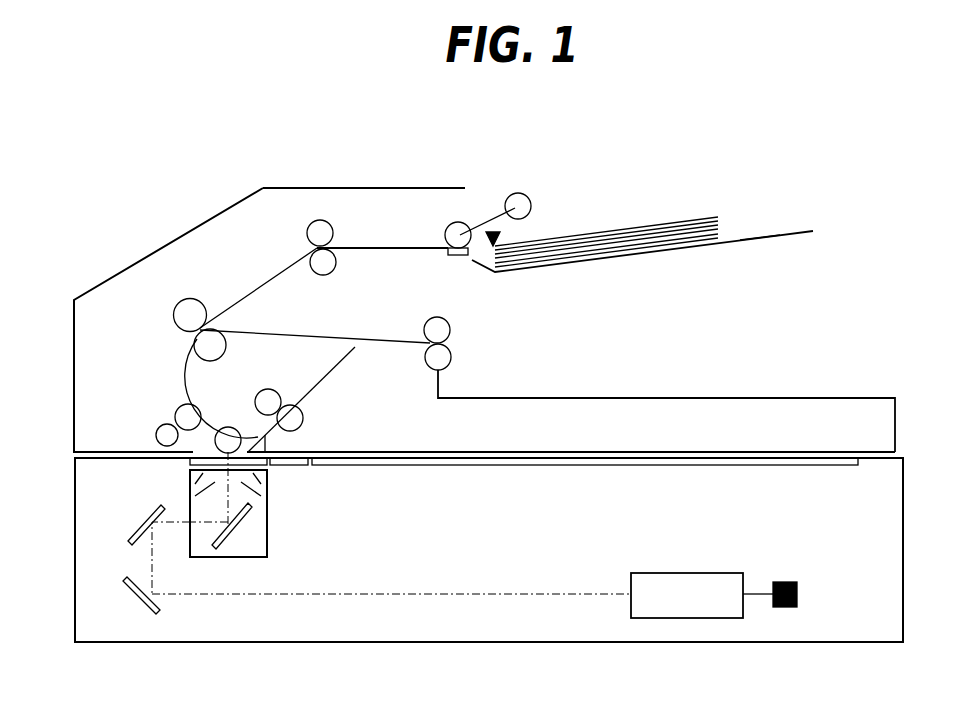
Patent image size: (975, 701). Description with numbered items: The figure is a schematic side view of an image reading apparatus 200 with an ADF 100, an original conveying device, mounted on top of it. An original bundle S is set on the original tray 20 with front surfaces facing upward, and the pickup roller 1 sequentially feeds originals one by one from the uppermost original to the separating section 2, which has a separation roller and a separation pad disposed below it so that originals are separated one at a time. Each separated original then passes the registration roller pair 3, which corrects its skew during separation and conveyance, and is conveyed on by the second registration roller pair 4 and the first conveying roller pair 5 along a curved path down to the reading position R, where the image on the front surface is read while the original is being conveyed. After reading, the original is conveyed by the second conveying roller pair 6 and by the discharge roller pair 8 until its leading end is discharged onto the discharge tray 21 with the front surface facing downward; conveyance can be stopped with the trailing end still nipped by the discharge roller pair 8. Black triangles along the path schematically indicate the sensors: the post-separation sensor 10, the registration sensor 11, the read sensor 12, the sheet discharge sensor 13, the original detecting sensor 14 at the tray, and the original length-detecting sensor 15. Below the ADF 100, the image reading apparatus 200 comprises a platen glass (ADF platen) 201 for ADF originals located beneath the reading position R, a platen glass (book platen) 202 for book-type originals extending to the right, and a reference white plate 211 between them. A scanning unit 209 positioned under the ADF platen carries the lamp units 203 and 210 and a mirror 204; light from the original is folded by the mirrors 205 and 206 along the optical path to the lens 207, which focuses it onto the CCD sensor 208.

The ADF 100 is at (317, 178).
The image reading apparatus 200 is at (17, 490).
The pickup roller 1 is at (520, 193).
The separating section 2 is at (403, 188).
The registration roller pair 3 is at (310, 219).
The second registration roller pair 4 is at (174, 317).
The first conveying roller pair 5 is at (156, 432).
The second conveying roller pair 6 is at (303, 418).
The discharge roller pair 8 is at (450, 330).
The post-separation sensor 10 is at (422, 248).
The registration sensor 11 is at (353, 248).
The read sensor 12 is at (158, 408).
The sheet discharge sensor 13 is at (381, 343).
The original detecting sensor 14 is at (500, 238).
The original length-detecting sensor 15 is at (758, 238).
The original tray 20 is at (737, 240).
The discharge tray 21 is at (676, 398).
The original bundle S is at (657, 215).
The reading position R is at (225, 414).
The platen glass (ADF platen) 201 is at (188, 465).
The platen glass (book platen) 202 is at (490, 465).
The lamp unit 203 is at (267, 483).
The mirror 204 is at (237, 533).
The mirror 205 is at (140, 522).
The mirror 206 is at (162, 612).
The lens 207 is at (685, 573).
The CCD sensor 208 is at (785, 582).
The scanning unit 209 is at (268, 537).
The lamp unit 210 is at (189, 480).
The reference white plate 211 is at (307, 465).